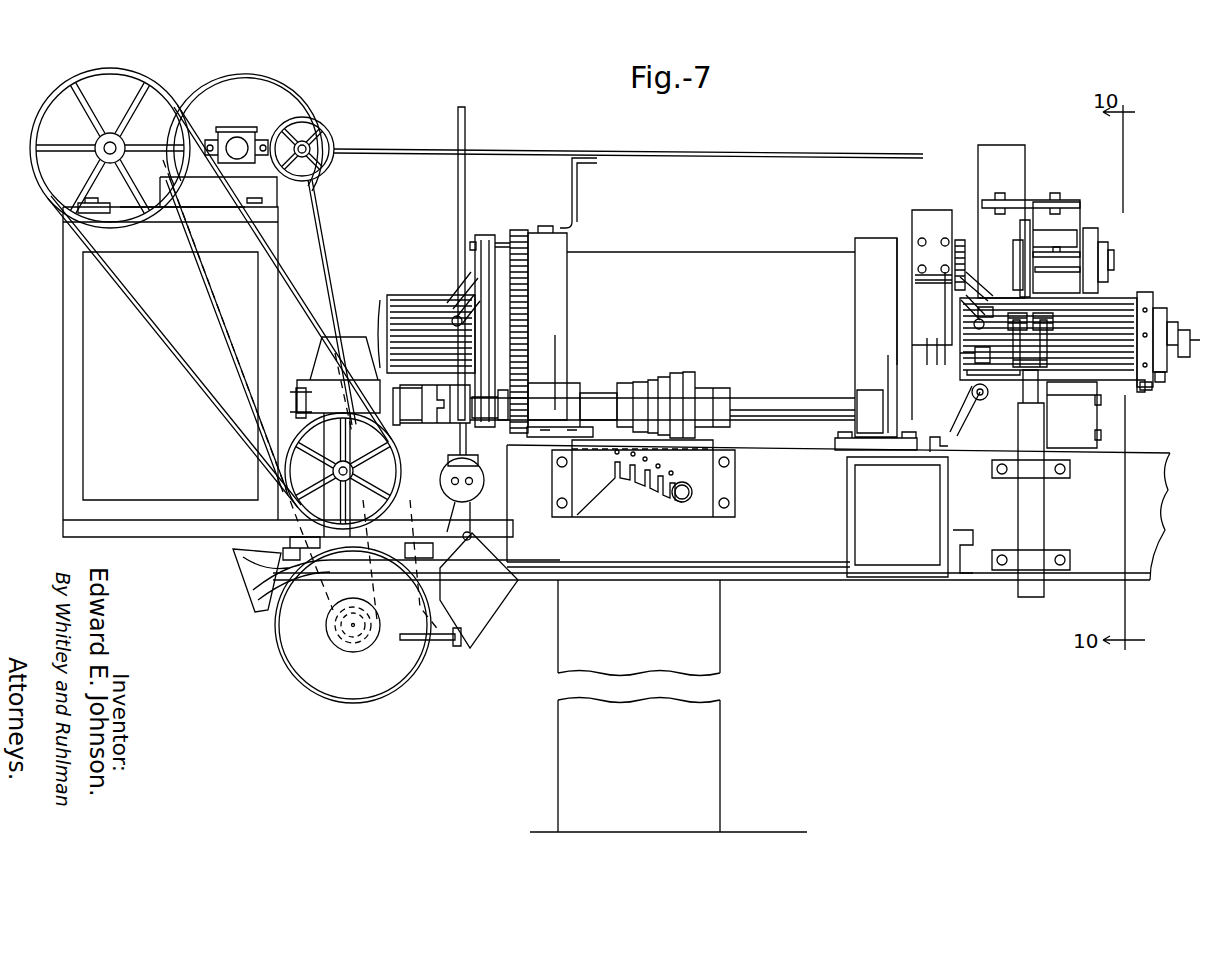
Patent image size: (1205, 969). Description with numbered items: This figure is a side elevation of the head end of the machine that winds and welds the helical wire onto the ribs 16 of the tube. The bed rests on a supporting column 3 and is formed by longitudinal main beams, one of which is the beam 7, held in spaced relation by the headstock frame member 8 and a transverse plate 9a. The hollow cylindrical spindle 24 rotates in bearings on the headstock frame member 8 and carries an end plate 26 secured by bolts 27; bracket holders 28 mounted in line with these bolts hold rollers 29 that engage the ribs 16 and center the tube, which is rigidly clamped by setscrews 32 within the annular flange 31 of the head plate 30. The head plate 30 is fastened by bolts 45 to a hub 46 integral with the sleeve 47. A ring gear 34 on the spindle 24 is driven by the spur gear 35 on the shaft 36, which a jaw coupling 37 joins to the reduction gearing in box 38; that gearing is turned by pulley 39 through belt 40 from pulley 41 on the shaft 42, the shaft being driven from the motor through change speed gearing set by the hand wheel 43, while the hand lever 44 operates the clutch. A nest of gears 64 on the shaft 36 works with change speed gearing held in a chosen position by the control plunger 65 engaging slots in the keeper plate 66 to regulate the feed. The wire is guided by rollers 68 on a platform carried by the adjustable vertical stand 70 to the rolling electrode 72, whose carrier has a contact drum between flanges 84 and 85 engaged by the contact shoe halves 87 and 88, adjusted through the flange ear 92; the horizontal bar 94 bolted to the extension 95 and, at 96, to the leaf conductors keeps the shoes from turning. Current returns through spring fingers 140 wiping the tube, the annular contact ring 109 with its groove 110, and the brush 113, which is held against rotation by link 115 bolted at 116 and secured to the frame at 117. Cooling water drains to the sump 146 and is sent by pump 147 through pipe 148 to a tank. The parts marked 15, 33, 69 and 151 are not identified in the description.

The supporting column 3 is at (716, 707).
The main beam 7 is at (1098, 568).
The headstock frame member 8 is at (569, 246).
The transverse plate 9a is at (1085, 447).
The motor 15 is at (392, 318).
The rib 16 is at (395, 300).
The hollow cylindrical spindle 24 is at (708, 252).
The end plate 26 is at (484, 236).
The bolt 27 is at (470, 243).
The bracket holder 28 is at (466, 290).
The roller 29 is at (452, 305).
The head plate 30 is at (1148, 388).
The annular flange 31 is at (1142, 392).
The setscrew 32 is at (1160, 382).
The wheel 33 is at (313, 677).
The ring gear 34 is at (518, 230).
The spur gear 35 is at (525, 400).
The shaft 36 is at (488, 415).
The jaw coupling 37 is at (447, 421).
The reduction gearing box 38 is at (327, 353).
The pulley 39 is at (293, 443).
The belt 40 is at (178, 366).
The pulley 41 is at (144, 210).
The shaft 42 is at (112, 140).
The hand wheel 43 is at (324, 128).
The hand lever 44 is at (706, 151).
The bolt 45 is at (1160, 308).
The hub 46 is at (1148, 292).
The sleeve 47 is at (1183, 360).
The nest of gears 64 is at (673, 372).
The control plunger 65 is at (690, 503).
The keeper plate 66 is at (736, 478).
The guide roller 68 is at (1045, 335).
The bracket 69 is at (1048, 365).
The adjustable vertical stand 70 is at (1038, 525).
The electrode 72 is at (1020, 235).
The flange 84 is at (1088, 243).
The flange 85 is at (1042, 250).
The contact shoe member 87 is at (1078, 237).
The contact shoe member 88 is at (1073, 279).
The flange ear 92 is at (1072, 233).
The horizontal bar member 94 is at (1077, 212).
The extension 95 is at (1070, 213).
The bolted connection 96 is at (1005, 200).
The annular contact ring 109 is at (913, 354).
The annular contact groove 110 is at (913, 368).
The contact brush 113 is at (920, 306).
The link 115 is at (918, 298).
The bolted connection 116 is at (912, 248).
The frame attachment 117 is at (931, 440).
The spring finger 140 is at (960, 353).
The sump 146 is at (465, 615).
The pump 147 is at (485, 473).
The pipe 148 is at (466, 126).
The box 151 is at (905, 580).